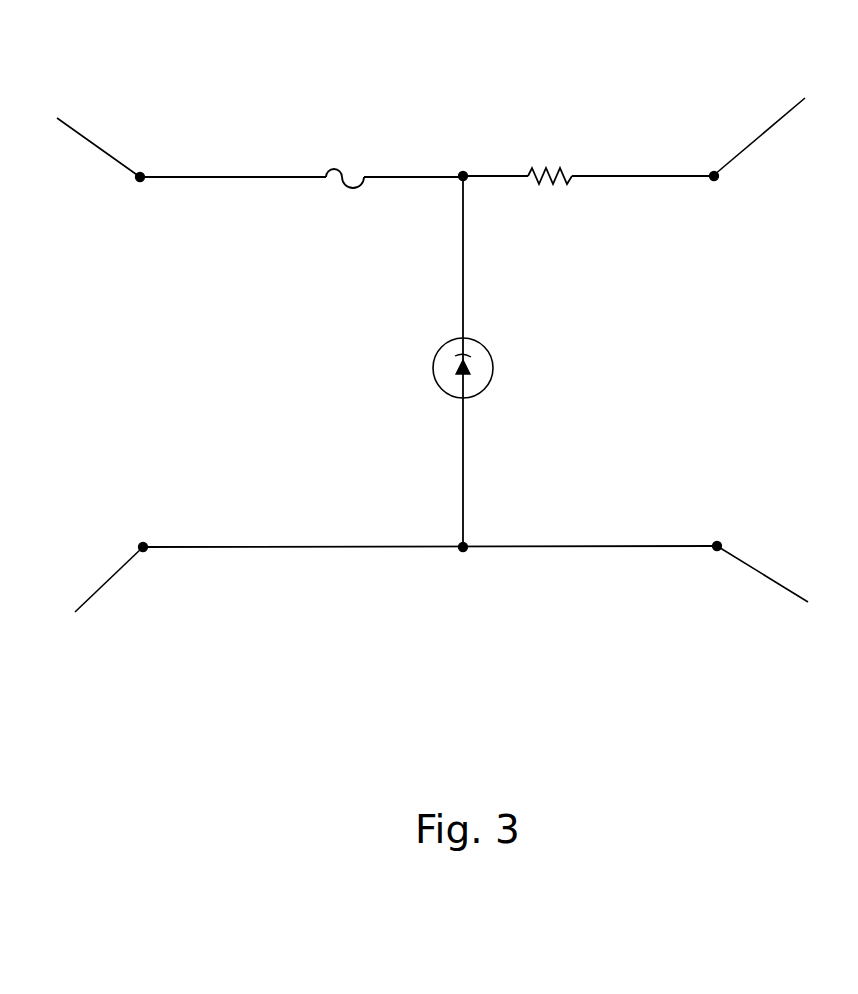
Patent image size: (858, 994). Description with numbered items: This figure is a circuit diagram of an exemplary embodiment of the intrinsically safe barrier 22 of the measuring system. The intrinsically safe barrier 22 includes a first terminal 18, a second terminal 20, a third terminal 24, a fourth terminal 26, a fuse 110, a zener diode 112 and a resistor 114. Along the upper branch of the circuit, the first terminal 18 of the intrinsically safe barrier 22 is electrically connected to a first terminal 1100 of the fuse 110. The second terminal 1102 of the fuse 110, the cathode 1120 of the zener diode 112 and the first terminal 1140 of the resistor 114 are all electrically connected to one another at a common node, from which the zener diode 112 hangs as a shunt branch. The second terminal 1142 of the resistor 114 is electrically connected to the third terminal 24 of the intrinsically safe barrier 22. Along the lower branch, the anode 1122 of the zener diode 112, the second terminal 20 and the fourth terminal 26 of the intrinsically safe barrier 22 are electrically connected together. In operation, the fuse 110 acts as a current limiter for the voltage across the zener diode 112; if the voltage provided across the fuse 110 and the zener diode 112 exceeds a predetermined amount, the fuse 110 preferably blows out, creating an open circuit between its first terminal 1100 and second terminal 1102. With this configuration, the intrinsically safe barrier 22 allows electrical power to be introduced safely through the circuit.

The first terminal 18 is at (94, 134).
The second terminal 20 is at (97, 594).
The intrinsically safe barrier 22 is at (480, 769).
The third terminal 24 is at (765, 121).
The fourth terminal 26 is at (769, 591).
The fuse 110 is at (342, 165).
The zener diode 112 is at (443, 391).
The resistor 114 is at (562, 168).
The first terminal of the fuse 1100 is at (245, 177).
The second terminal of the fuse 1102 is at (418, 177).
The cathode of the zener diode 1120 is at (463, 269).
The anode of the zener diode 1122 is at (465, 452).
The first terminal of the resistor 1140 is at (500, 176).
The second terminal of the resistor 1142 is at (673, 176).